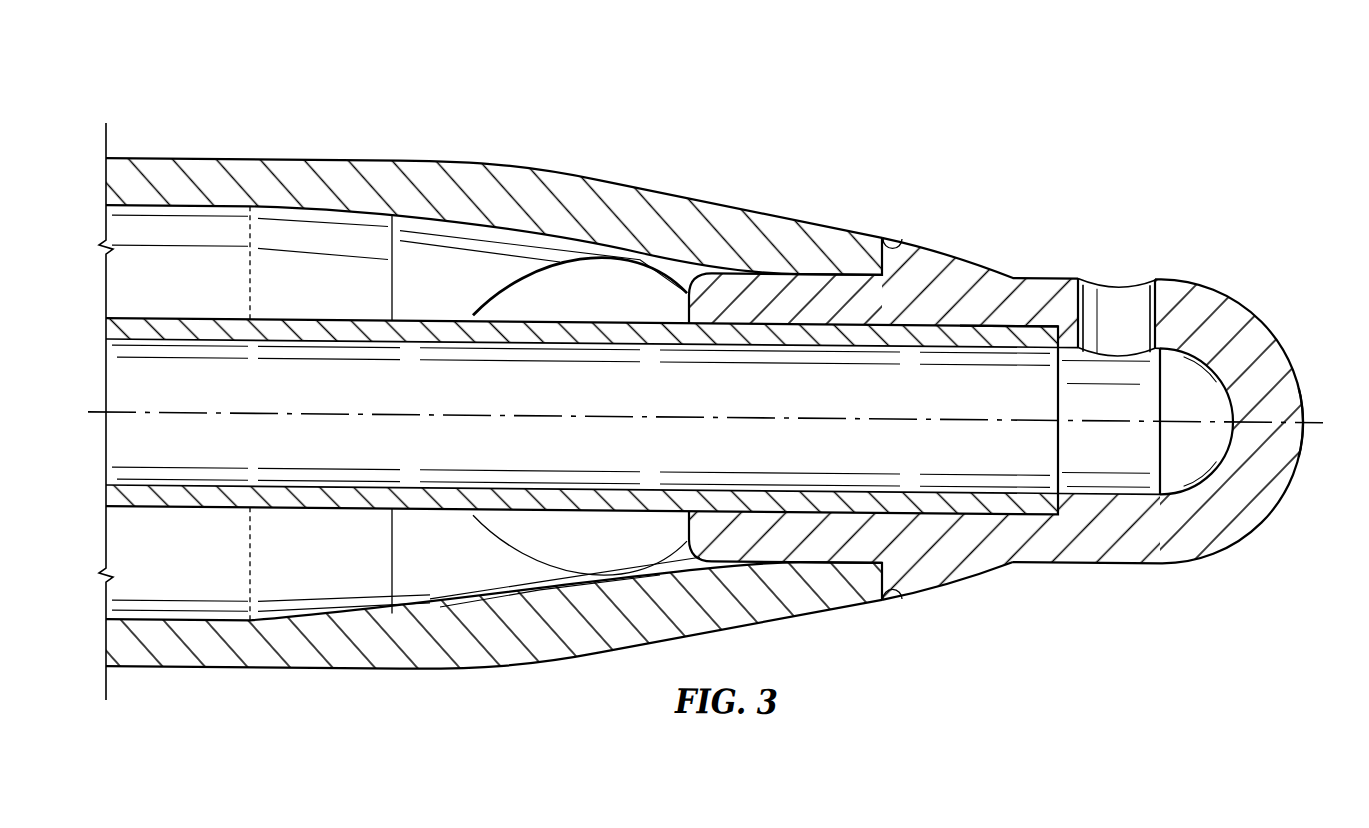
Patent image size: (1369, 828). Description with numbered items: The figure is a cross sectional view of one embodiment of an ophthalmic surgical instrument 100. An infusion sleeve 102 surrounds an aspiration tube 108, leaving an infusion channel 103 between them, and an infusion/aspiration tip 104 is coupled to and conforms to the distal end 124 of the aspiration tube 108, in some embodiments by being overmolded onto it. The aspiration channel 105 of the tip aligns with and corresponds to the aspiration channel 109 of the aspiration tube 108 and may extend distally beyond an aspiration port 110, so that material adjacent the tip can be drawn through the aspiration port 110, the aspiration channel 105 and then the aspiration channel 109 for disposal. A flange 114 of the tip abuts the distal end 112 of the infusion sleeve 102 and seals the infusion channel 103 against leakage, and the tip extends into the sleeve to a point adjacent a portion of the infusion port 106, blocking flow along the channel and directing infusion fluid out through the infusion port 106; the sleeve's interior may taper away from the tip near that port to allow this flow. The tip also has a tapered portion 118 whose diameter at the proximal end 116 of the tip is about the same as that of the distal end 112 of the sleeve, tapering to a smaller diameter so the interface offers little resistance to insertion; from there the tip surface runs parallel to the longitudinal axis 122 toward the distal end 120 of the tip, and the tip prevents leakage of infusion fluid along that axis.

The instrument 100 is at (606, 84).
The infusion sleeve 102 is at (200, 158).
The infusion channel 103 is at (173, 590).
The infusion/aspiration tip 104 is at (1188, 273).
The aspiration channel 105 is at (1118, 462).
The infusion port 106 is at (518, 300).
The aspiration tube 108 is at (427, 508).
The aspiration channel 109 is at (314, 466).
The aspiration port 110 is at (1133, 293).
The distal end of infusion sleeve 112 is at (900, 231).
The flange 114 is at (847, 597).
The proximal end of infusion/aspiration tip 116 is at (903, 618).
The tapered portion 118 is at (941, 243).
The distal end of infusion/aspiration tip 120 is at (1302, 446).
The longitudinal axis 122 is at (972, 414).
The distal end of aspiration tube 124 is at (1015, 316).